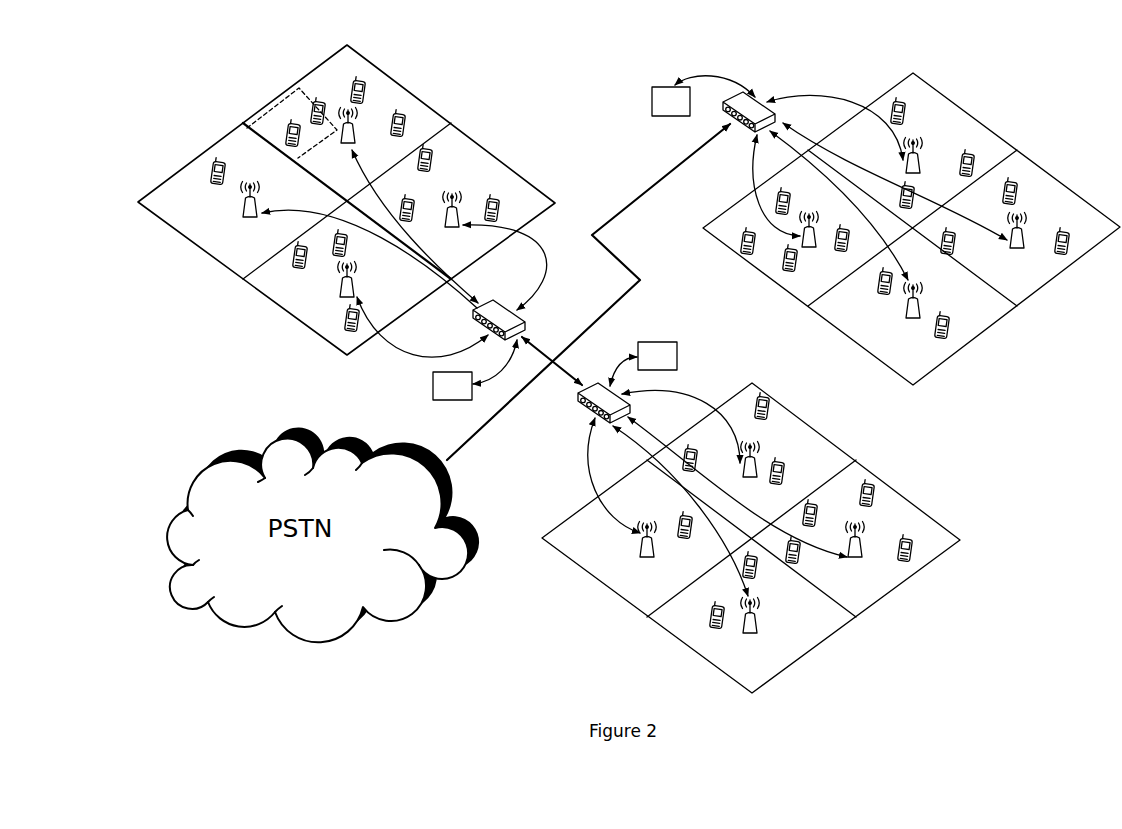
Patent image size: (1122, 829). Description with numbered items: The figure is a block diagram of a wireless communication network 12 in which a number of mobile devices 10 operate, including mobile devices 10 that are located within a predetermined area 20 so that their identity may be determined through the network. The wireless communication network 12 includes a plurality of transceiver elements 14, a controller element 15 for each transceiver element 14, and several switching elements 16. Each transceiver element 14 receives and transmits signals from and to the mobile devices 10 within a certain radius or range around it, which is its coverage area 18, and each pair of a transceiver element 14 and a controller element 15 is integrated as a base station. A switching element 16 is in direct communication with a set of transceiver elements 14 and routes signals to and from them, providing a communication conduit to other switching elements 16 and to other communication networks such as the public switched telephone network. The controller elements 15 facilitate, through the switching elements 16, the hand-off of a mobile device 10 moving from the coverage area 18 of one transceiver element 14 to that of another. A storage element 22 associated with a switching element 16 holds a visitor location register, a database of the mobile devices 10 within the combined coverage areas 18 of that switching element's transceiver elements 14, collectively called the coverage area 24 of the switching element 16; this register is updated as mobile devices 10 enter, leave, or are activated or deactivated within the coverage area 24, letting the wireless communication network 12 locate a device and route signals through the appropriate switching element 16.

The mobile device 10 is at (314, 100).
The wireless communication network 12 is at (924, 430).
The transceiver element 14 is at (355, 110).
The controller element 15 is at (353, 133).
The switching element 16 is at (517, 323).
The coverage area of the transceiver element 18 is at (353, 63).
The predetermined area 20 is at (267, 120).
The storage element 22 is at (465, 396).
The coverage area of the switching element 24 is at (255, 310).